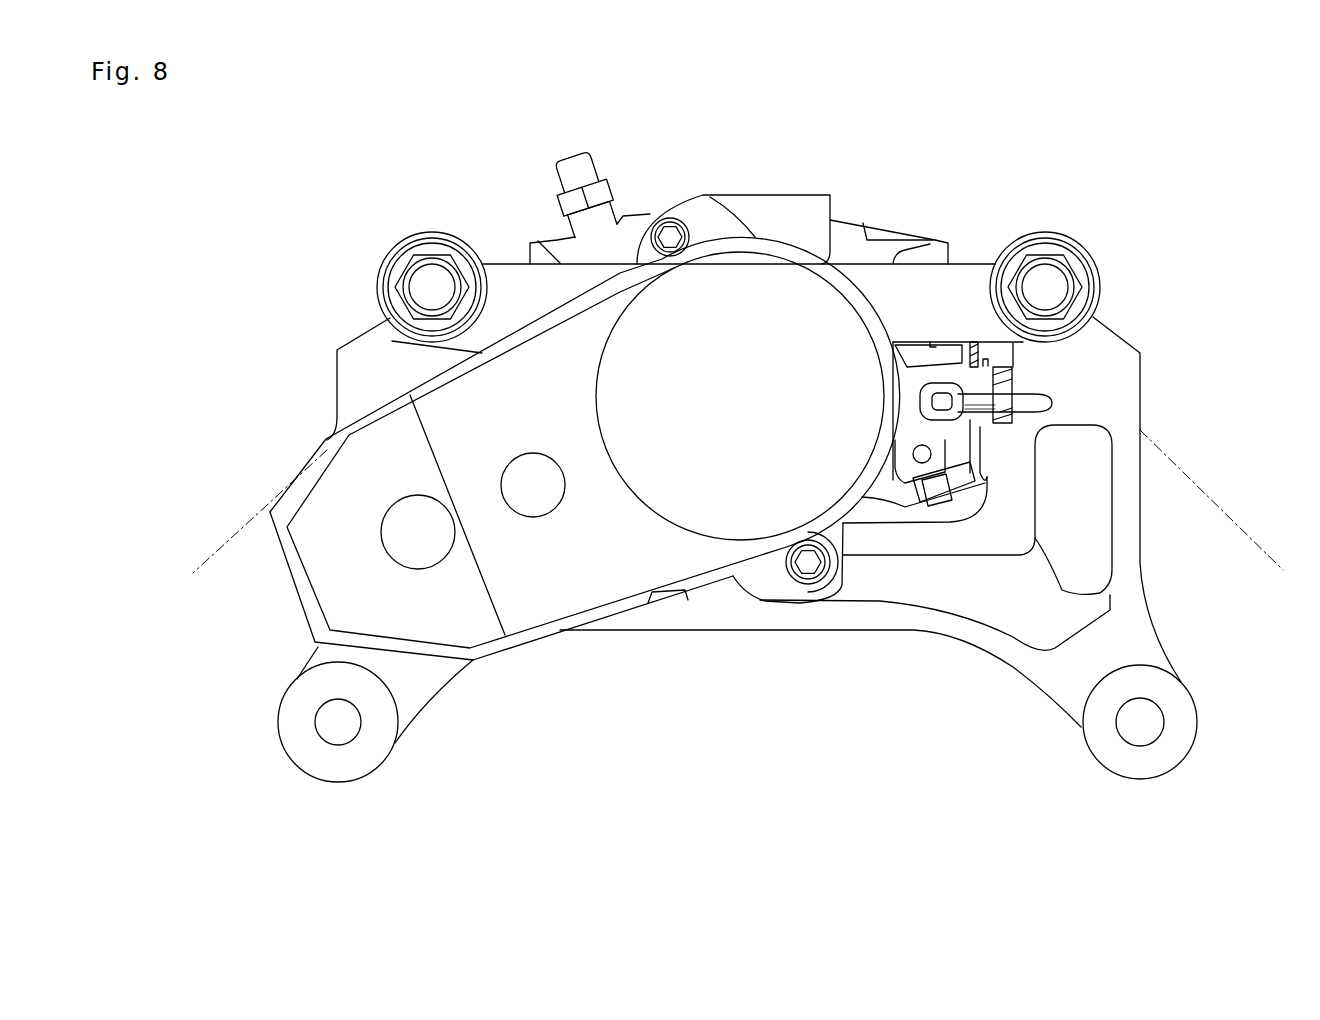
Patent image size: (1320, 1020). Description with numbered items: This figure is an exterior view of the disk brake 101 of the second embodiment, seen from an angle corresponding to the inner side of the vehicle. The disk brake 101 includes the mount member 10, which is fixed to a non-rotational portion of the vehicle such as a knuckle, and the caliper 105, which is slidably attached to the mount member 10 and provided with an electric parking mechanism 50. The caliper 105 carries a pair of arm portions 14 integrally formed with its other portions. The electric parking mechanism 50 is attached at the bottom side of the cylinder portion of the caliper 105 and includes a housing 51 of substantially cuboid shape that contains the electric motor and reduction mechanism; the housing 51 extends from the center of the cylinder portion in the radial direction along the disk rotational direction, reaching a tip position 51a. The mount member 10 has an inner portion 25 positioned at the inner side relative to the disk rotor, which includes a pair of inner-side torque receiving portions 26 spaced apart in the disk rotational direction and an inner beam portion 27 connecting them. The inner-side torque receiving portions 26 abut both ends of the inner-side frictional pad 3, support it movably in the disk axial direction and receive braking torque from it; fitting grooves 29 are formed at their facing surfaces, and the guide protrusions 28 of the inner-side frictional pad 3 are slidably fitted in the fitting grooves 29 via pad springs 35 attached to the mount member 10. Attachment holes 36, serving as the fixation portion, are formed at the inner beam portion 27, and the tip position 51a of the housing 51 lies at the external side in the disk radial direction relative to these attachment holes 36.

The disk brake 101 is at (1110, 201).
The mount member 10 is at (1160, 330).
The arm portions 14 is at (505, 293).
The inner-side frictional pad 3 is at (913, 367).
The electric parking mechanism 50 is at (762, 305).
The caliper 105 is at (761, 218).
The housing 51 is at (585, 490).
The tip position 51a is at (400, 607).
The inner beam portion 27 is at (718, 615).
The guide protrusions 28 is at (1013, 363).
The fitting grooves 29 is at (1013, 373).
The inner-side torque receiving portions 26 is at (1013, 462).
The inner portion 25 is at (1152, 502).
The pad springs 35 is at (963, 485).
The attachment holes 36 is at (347, 735).